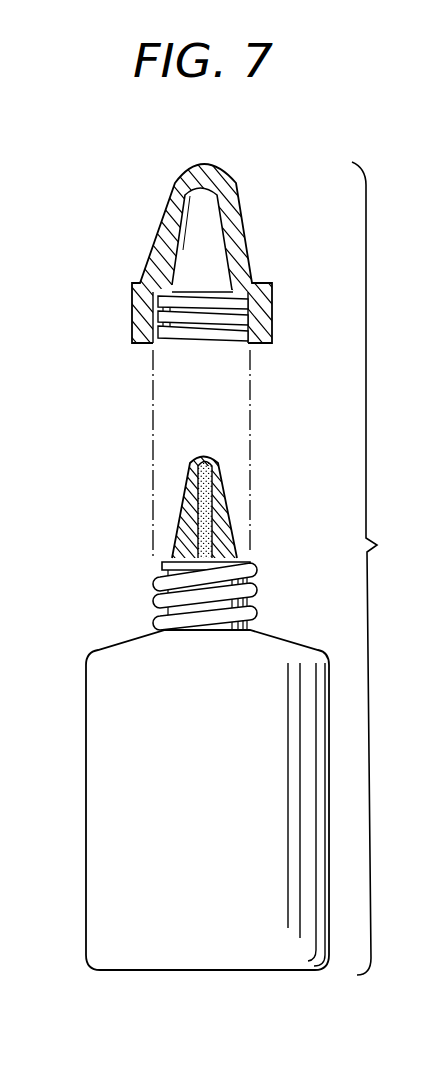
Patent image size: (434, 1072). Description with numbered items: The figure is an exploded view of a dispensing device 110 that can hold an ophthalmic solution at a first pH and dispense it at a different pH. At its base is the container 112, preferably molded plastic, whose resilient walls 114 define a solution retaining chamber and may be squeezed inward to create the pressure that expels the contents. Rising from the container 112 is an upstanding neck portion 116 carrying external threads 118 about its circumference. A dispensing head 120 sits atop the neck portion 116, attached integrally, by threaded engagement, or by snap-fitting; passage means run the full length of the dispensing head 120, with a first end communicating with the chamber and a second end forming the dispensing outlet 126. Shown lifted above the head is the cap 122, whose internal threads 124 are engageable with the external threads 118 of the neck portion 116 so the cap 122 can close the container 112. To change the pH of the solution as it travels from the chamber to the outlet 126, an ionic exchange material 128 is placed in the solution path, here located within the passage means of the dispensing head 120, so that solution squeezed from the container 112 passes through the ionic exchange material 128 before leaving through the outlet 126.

The dispensing device 110 is at (381, 568).
The container 112 is at (188, 780).
The resilient walls 114 is at (86, 800).
The neck portion 116 is at (162, 572).
The external threads 118 is at (251, 592).
The dispensing head 120 is at (223, 490).
The cap 122 is at (143, 216).
The threads 124 is at (184, 343).
The dispensing outlet 126 is at (202, 456).
The ionic exchange material 128 is at (183, 510).